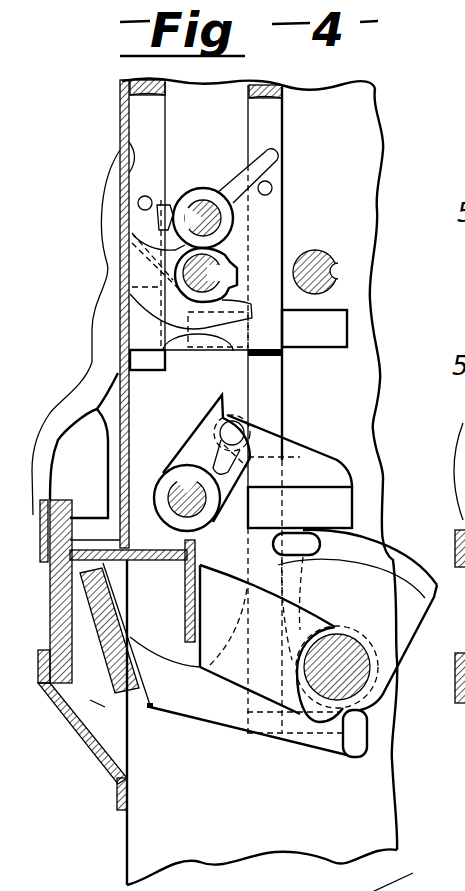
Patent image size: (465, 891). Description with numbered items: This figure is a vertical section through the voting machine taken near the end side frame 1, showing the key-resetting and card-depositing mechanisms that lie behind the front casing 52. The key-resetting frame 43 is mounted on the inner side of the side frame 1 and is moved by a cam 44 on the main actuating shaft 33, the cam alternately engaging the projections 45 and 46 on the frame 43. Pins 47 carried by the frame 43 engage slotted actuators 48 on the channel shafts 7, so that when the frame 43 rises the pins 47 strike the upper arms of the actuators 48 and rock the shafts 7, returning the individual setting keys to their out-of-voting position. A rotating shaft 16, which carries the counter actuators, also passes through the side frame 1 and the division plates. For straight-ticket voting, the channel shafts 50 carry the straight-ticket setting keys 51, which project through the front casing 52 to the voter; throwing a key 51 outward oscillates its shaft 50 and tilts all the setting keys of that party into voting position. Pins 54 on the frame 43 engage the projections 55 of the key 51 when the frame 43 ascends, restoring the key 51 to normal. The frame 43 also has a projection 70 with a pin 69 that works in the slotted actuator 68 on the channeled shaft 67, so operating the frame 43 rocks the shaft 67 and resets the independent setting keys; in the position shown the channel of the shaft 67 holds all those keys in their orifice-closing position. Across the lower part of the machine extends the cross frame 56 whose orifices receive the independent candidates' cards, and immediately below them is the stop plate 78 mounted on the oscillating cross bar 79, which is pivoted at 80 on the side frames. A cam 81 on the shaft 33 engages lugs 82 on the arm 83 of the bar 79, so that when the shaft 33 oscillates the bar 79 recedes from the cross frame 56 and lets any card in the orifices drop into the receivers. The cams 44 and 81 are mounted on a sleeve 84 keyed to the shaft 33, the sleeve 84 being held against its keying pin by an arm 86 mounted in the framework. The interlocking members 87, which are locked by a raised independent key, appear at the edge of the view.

The side frame 1 is at (192, 767).
The channel shaft 7 is at (222, 262).
The rotating shaft 16 is at (330, 254).
The main actuating shaft 33 is at (350, 686).
The key-resetting frame 43 is at (265, 379).
The cam 44 is at (383, 547).
The projection 45 is at (300, 507).
The projection 46 is at (293, 722).
The pin 47 is at (150, 199).
The slotted actuator 48 is at (203, 202).
The channel shaft 50 is at (220, 222).
The straight-ticket setting key 51 is at (110, 313).
The front casing 52 is at (128, 463).
The pin 54 is at (272, 189).
The projection 55 is at (265, 165).
The cross frame 56 is at (57, 620).
The channel shaft 67 is at (193, 507).
The slotted actuator 68 is at (213, 423).
The pin 69 is at (237, 415).
The projection 70 is at (297, 450).
The stop plate 78 is at (107, 703).
The oscillating cross bar 79 is at (115, 662).
The pivot 80 is at (110, 580).
The cam 81 is at (351, 608).
The lug 82 is at (300, 543).
The arm 83 is at (238, 660).
The sleeve 84 is at (377, 646).
The arm 86 is at (228, 624).
The interlocking member 87 is at (457, 890).